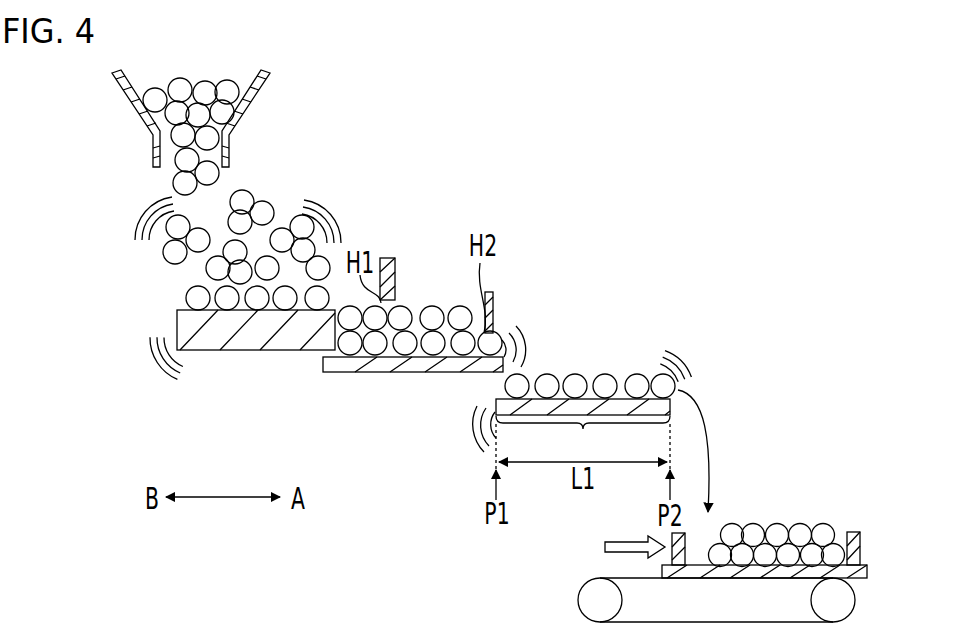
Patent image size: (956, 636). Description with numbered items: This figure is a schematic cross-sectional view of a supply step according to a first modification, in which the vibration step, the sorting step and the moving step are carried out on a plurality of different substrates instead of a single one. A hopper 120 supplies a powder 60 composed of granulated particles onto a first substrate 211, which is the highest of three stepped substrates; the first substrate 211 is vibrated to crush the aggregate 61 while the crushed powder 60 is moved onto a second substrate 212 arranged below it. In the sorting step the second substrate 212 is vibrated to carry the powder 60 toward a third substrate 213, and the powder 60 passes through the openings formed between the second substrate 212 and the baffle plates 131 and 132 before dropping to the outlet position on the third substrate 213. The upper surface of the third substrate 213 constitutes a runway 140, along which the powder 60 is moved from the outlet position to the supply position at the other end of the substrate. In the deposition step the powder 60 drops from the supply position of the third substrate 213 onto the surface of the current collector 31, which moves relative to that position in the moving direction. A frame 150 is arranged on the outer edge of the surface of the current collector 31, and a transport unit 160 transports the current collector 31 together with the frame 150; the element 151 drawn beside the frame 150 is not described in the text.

The current collector 31 is at (861, 572).
The powder 60 is at (237, 91).
The aggregate 61 is at (264, 196).
The hopper 120 is at (130, 106).
The baffle plate 131 is at (394, 263).
The baffle plate 132 is at (496, 300).
The runway 140 is at (583, 438).
The frame 150 is at (848, 532).
The stopper 151 is at (700, 557).
The transport unit 160 is at (578, 594).
The first substrate 211 is at (240, 337).
The second substrate 212 is at (373, 373).
The third substrate 213 is at (592, 399).